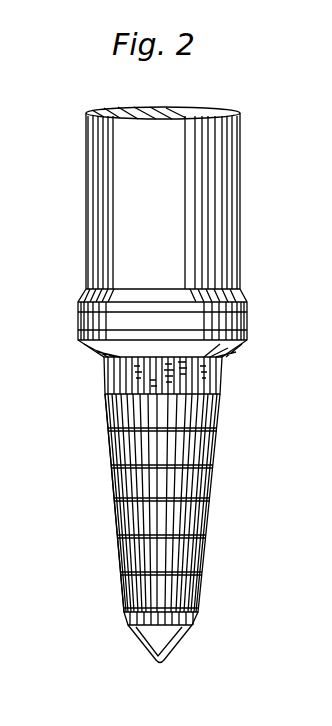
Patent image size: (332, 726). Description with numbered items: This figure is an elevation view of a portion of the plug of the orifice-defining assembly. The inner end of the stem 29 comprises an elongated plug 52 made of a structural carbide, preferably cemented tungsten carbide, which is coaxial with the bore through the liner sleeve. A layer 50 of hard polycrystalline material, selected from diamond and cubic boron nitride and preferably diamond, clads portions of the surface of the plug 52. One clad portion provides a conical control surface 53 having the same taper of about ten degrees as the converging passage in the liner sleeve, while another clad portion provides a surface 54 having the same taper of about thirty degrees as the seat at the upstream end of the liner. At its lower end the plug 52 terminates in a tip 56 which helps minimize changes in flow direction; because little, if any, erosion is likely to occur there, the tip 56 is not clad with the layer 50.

The stem 29 is at (240, 215).
The surface 54 is at (235, 350).
The conical control surface 53 is at (215, 428).
The elongated plug 52 is at (105, 432).
The layer of hard polycrystalline material 50 is at (212, 483).
The tip 56 is at (176, 646).